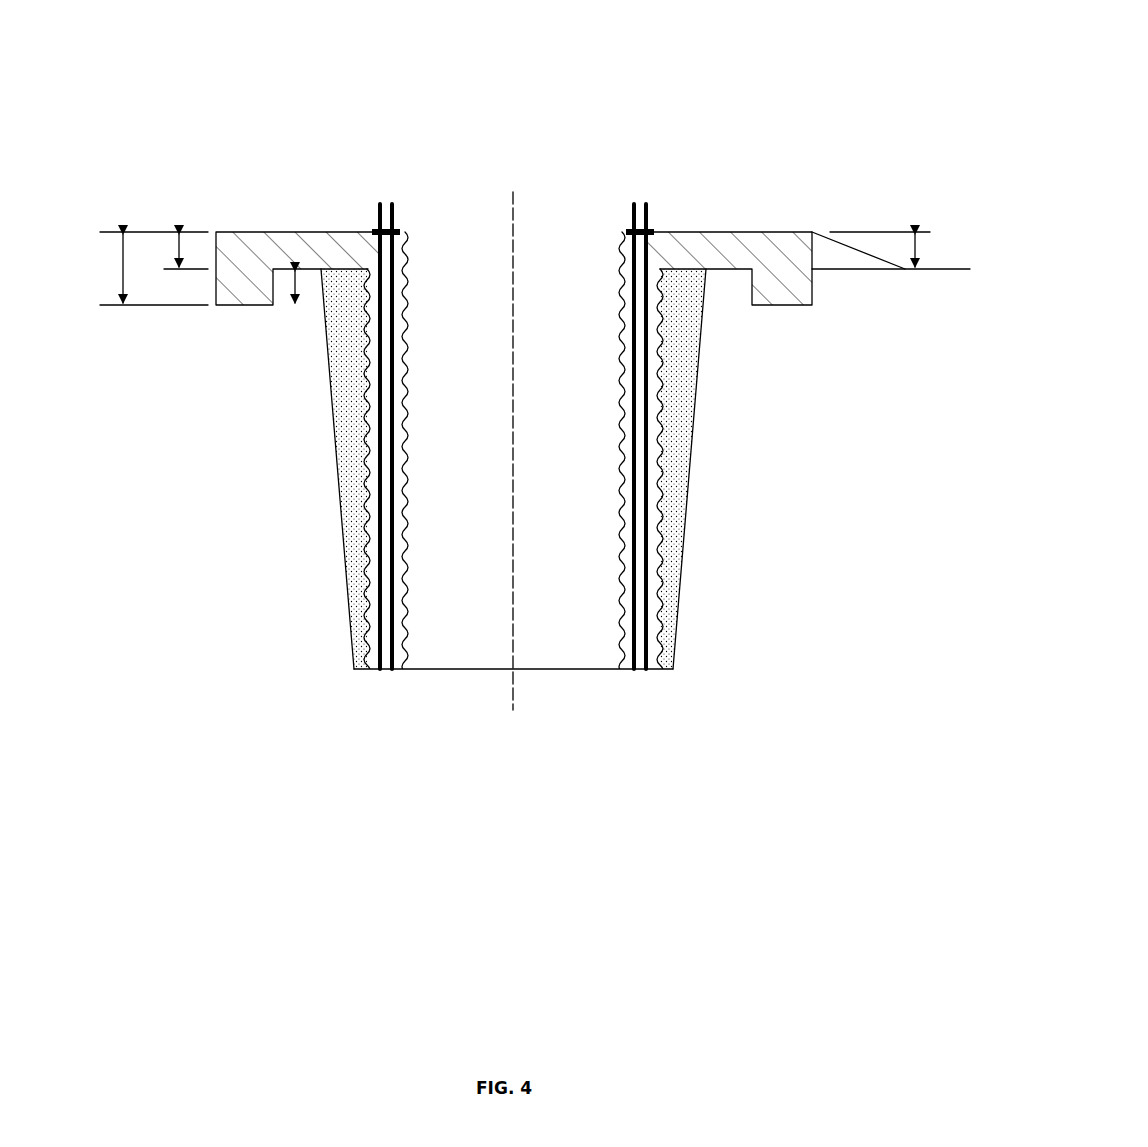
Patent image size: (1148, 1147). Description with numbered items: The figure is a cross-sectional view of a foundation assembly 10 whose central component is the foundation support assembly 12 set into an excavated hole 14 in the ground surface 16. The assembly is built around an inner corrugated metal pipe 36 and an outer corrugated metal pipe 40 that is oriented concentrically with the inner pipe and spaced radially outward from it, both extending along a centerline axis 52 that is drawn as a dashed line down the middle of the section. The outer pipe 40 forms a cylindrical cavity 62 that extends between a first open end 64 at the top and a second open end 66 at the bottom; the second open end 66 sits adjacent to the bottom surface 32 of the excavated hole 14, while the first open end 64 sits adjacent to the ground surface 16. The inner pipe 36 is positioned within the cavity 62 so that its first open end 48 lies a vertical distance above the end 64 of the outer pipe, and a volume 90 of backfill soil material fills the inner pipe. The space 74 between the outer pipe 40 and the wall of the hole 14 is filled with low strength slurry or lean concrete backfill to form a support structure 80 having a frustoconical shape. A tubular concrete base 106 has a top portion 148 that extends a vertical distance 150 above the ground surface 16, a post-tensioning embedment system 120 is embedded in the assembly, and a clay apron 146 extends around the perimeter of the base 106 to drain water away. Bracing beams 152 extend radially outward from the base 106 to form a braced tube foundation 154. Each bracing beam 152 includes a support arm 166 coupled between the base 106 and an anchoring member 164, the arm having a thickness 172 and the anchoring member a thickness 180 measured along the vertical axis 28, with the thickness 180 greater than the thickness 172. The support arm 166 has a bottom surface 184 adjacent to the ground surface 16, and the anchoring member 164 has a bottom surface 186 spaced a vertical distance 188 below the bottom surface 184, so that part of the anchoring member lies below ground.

The assembly 10 is at (766, 49).
The foundation support assembly 12 is at (348, 100).
The excavated hole 14 is at (692, 470).
The ground surface 16 is at (947, 268).
The vertical axis 28 is at (517, 203).
The bottom surface 32 is at (612, 671).
The inner corrugated metal pipe 36 is at (620, 548).
The outer corrugated metal pipe 40 is at (661, 580).
The first open end 48 is at (620, 226).
The centerline axis 52 is at (513, 218).
The cavity 62 is at (566, 686).
The first open end 64 is at (660, 261).
The second open end 66 is at (430, 686).
The space 74 is at (683, 419).
The support structure 80 is at (701, 352).
The volume of backfill soil material 90 is at (476, 598).
The tubular concrete base 106 is at (620, 372).
The post-tensioning embedment system 120 is at (651, 192).
The clay apron 146 is at (867, 254).
The top portion 148 is at (610, 252).
The vertical distance 150 is at (913, 250).
The bracing beam 152 is at (345, 232).
The braced tube foundation 154 is at (242, 150).
The anchoring member 164 is at (227, 305).
The support arm 166 is at (296, 232).
The thickness 172 is at (179, 237).
The thickness 180 is at (106, 272).
The bottom surface 184 is at (323, 305).
The bottom surface 186 is at (262, 305).
The vertical distance 188 is at (284, 293).